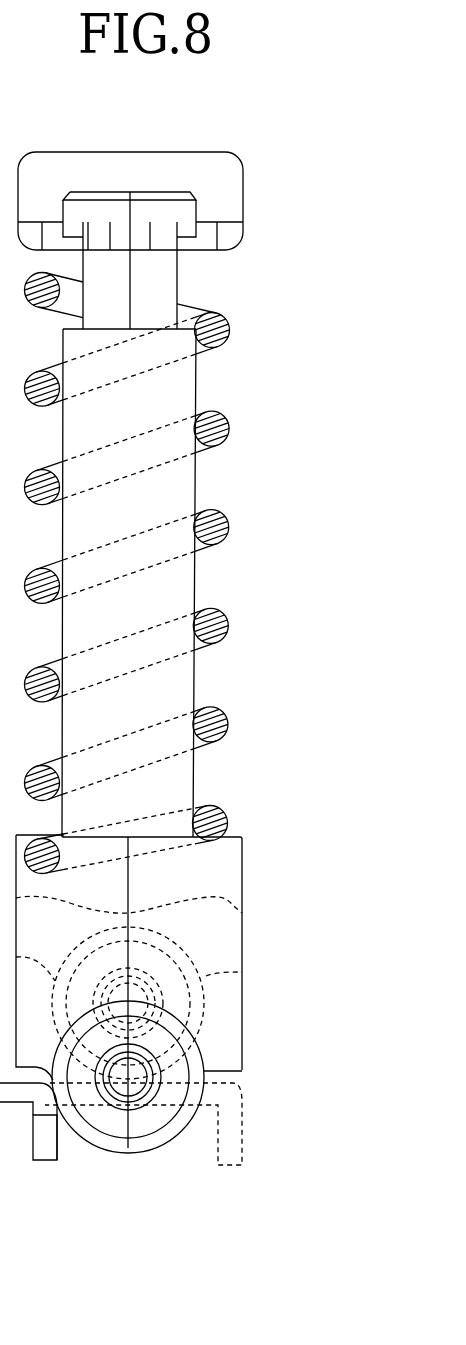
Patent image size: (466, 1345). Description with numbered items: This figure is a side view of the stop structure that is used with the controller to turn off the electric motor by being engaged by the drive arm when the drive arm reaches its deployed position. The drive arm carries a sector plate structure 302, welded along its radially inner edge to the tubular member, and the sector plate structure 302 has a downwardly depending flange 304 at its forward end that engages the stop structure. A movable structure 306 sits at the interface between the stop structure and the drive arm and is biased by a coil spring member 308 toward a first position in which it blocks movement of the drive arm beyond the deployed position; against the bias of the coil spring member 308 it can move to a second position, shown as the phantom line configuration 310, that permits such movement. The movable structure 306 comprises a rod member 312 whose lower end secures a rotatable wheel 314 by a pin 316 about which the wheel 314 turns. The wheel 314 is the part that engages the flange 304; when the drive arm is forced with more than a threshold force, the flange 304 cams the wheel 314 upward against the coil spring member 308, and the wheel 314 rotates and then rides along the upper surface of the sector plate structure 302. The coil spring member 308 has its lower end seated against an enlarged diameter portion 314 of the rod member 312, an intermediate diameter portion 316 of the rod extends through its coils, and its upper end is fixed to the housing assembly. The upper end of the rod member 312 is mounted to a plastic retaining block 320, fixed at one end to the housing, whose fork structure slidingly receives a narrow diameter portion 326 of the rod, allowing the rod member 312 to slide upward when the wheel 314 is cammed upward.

The sector plate structure 302 is at (28, 1156).
The flange 304 is at (233, 1113).
The movable structure 306 is at (248, 915).
The coil spring member 308 is at (222, 530).
The phantom line configuration 310 is at (204, 1013).
The rod member 312 is at (222, 955).
The rotatable wheel 314 is at (230, 851).
The pin 316 is at (177, 673).
The retaining block 320 is at (238, 188).
The narrow diameter portion 326 is at (172, 275).